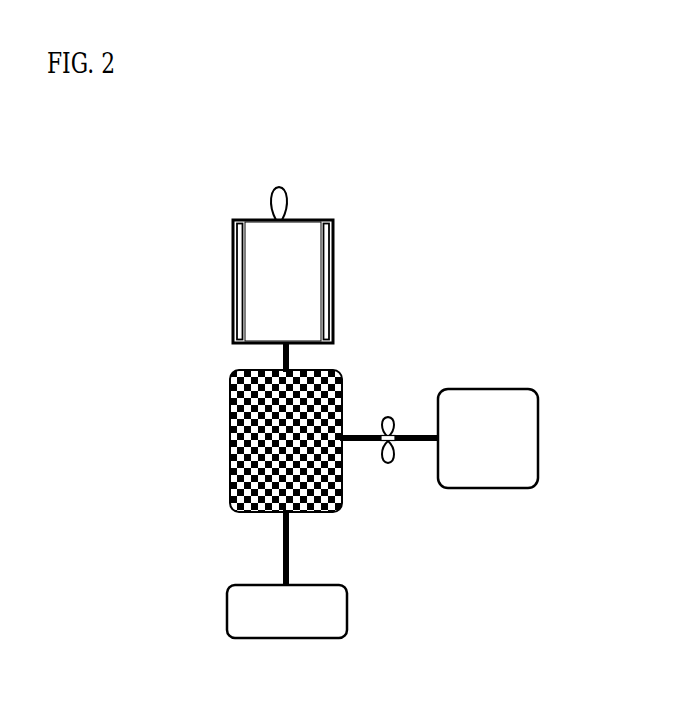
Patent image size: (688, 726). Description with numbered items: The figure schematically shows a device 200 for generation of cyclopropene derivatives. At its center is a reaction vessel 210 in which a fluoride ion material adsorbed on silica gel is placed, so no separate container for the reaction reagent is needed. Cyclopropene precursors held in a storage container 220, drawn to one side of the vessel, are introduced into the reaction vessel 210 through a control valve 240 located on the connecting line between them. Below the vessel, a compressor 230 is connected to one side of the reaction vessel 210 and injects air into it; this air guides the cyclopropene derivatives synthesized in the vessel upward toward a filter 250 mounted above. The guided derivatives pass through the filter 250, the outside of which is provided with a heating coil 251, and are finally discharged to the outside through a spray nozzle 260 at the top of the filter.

The device for generation of cyclopropene derivatives 200 is at (88, 164).
The reaction vessel 210 is at (232, 445).
The storage container 220 is at (504, 389).
The compressor 230 is at (226, 610).
The control valve 240 is at (390, 417).
The filter 250 is at (278, 280).
The heating coil 251 is at (224, 272).
The spray nozzle 260 is at (288, 196).